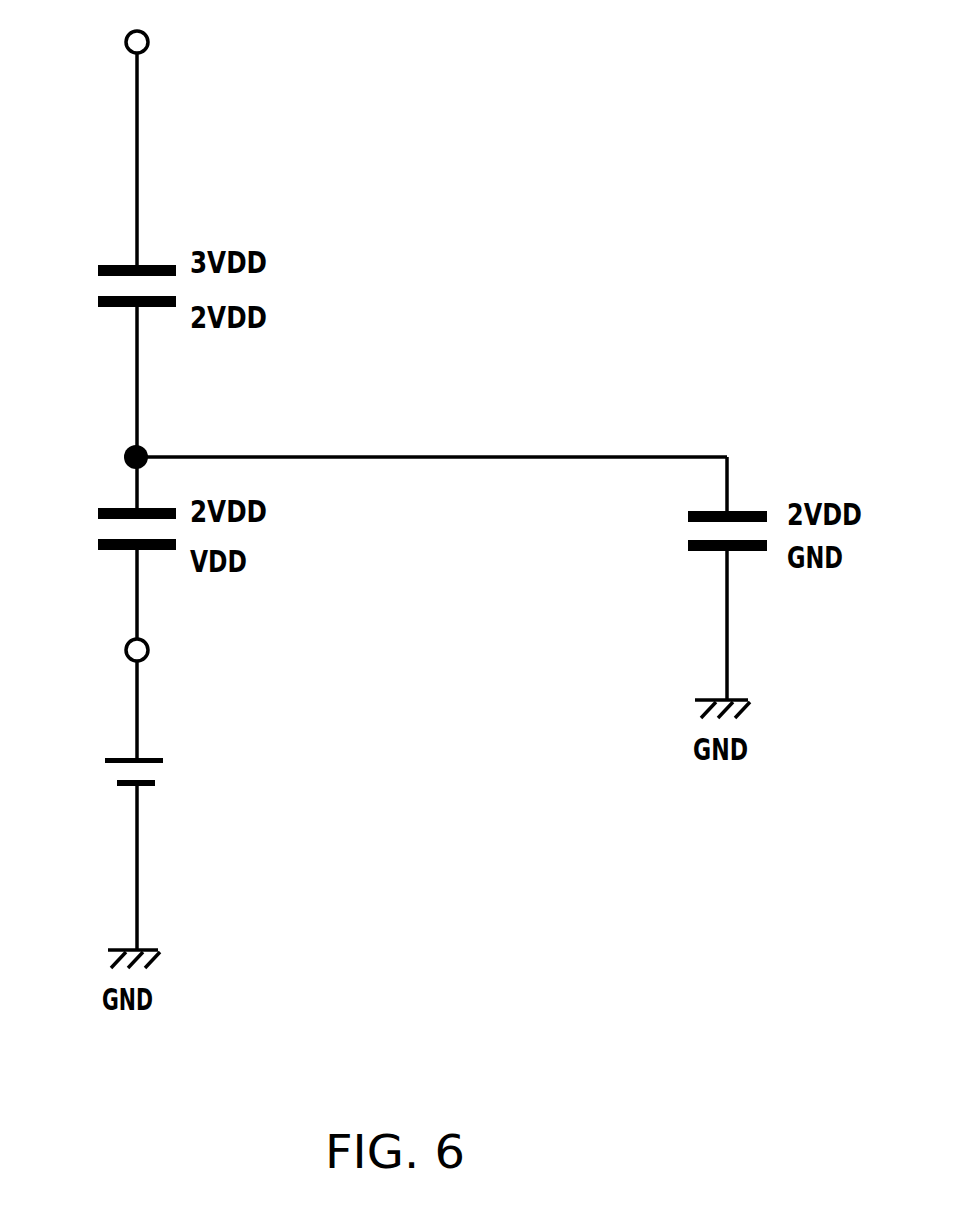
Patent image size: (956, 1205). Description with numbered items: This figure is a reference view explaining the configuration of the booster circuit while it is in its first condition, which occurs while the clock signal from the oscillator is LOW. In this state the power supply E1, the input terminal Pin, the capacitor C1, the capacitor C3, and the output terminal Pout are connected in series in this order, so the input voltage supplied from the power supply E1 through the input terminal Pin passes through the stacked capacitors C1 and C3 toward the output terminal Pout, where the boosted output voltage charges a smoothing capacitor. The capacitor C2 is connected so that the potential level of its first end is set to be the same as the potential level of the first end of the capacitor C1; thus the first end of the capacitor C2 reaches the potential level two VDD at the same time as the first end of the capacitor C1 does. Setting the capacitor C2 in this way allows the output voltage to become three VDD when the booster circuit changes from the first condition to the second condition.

The capacitor C1 is at (108, 529).
The capacitor C2 is at (699, 531).
The capacitor C3 is at (108, 286).
The power supply E1 is at (105, 772).
The output terminal Pout is at (96, 43).
The input terminal Pin is at (97, 652).